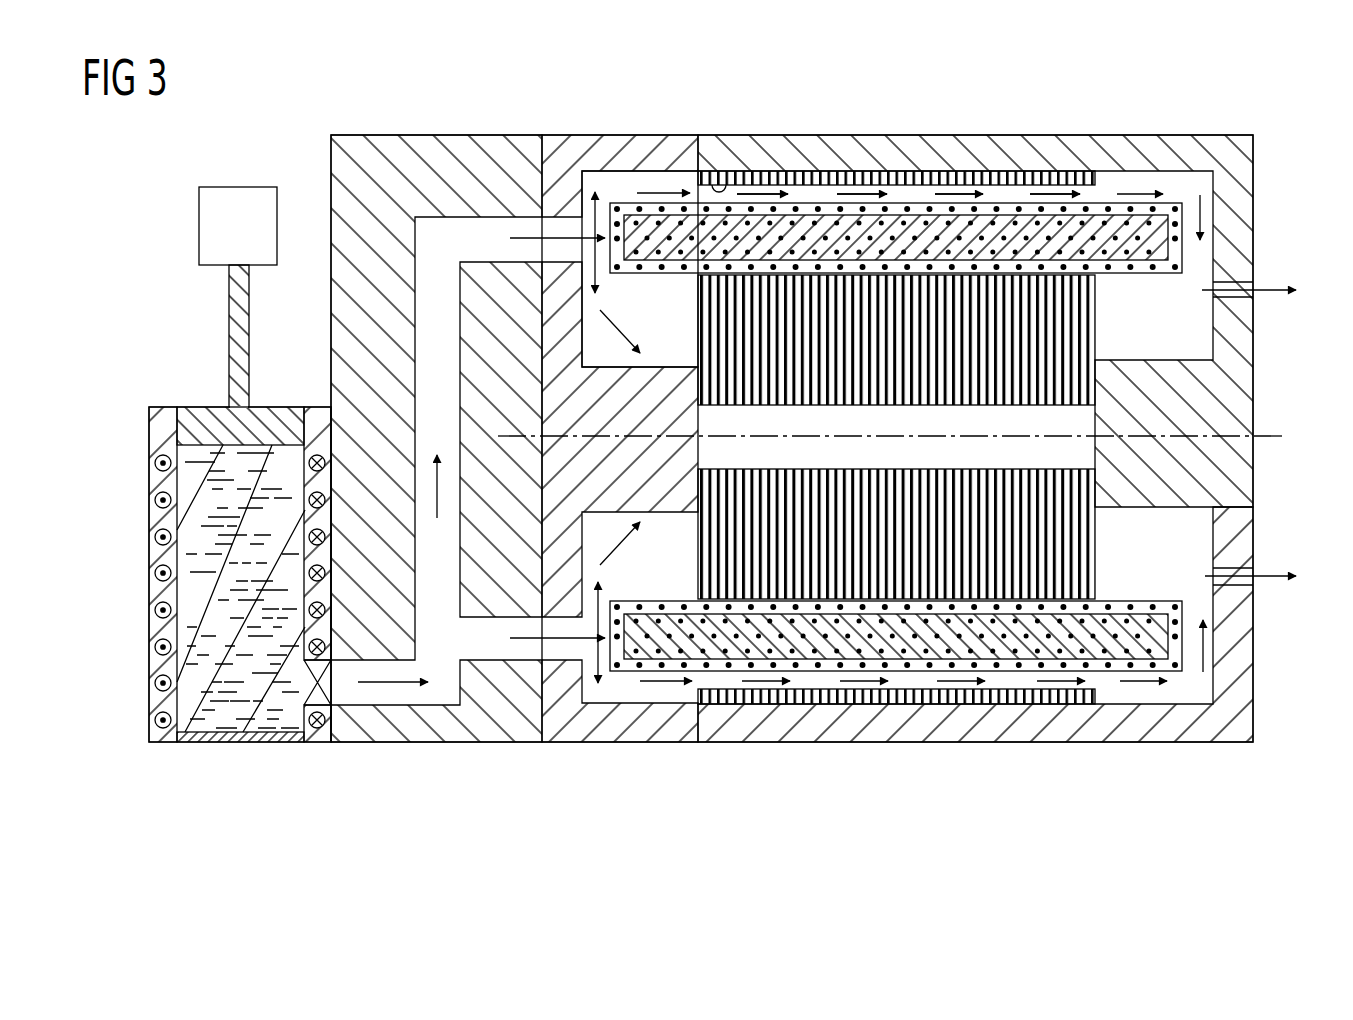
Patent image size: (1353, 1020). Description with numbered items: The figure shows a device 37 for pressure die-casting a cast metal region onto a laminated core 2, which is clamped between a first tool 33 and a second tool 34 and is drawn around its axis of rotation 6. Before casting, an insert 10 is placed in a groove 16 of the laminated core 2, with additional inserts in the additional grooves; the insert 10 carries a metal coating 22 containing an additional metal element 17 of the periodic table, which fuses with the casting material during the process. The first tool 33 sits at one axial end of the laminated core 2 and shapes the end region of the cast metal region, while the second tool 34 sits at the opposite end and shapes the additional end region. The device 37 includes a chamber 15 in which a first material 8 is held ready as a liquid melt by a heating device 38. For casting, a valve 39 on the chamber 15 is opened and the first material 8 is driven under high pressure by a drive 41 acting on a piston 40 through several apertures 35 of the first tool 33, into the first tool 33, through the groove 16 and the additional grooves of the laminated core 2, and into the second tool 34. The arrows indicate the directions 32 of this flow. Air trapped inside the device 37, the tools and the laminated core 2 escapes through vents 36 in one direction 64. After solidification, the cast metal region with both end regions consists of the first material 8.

The laminated core 2 is at (1097, 339).
The axis of rotation 6 is at (1285, 434).
The first material 8 is at (193, 633).
The insert 10 is at (627, 202).
The chamber 15 is at (233, 742).
The groove 16 is at (722, 186).
The additional metal element 17 is at (815, 200).
The metal coating 22 is at (920, 190).
The directions 32 is at (375, 685).
The first tool 33 is at (568, 140).
The second tool 34 is at (1195, 135).
The apertures 35 is at (541, 236).
The vents 36 is at (1247, 293).
The device 37 is at (281, 151).
The heating device 38 is at (158, 722).
The valve 39 is at (310, 688).
The piston 40 is at (237, 340).
The drive 41 is at (198, 231).
The direction 64 is at (1270, 290).